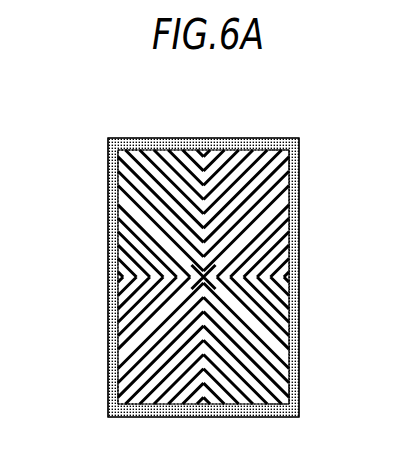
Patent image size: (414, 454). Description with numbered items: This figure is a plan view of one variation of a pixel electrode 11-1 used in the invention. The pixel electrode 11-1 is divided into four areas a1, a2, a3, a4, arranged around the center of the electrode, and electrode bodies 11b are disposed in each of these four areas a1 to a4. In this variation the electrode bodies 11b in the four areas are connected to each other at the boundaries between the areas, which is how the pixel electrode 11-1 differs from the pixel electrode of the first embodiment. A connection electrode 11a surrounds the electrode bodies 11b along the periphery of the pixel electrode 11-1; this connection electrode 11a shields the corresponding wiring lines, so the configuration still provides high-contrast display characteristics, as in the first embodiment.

The pixel electrode 11-1 is at (85, 148).
The connection electrode 11a is at (296, 305).
The electrode bodies 11b is at (266, 184).
The area a1 is at (274, 170).
The area a2 is at (272, 370).
The area a3 is at (125, 350).
The area a4 is at (121, 192).